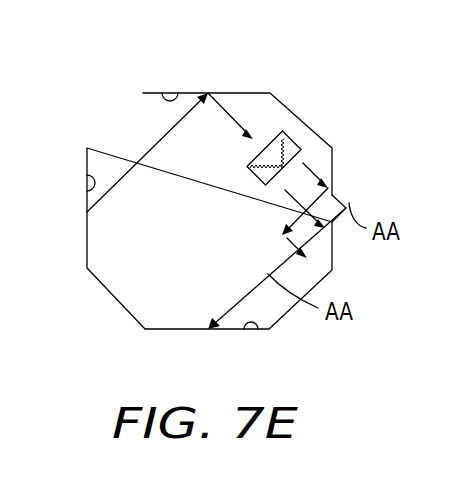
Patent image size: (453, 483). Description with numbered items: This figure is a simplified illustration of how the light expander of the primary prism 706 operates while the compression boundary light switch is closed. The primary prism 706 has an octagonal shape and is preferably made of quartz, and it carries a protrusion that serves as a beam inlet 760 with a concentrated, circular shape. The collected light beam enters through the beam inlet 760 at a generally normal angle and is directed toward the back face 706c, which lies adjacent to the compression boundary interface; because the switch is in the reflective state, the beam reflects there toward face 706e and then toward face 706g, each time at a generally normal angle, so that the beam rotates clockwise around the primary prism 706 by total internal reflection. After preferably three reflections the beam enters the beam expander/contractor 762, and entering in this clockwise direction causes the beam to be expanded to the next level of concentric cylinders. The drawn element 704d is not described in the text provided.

The primary prism 706 is at (115, 121).
The prism face 706g is at (175, 93).
The prism face 706e is at (84, 178).
The back face 706c is at (256, 330).
The beam expander/contractor 762 is at (290, 147).
The beam inlet 760 is at (343, 203).
The light beam 704d is at (334, 240).